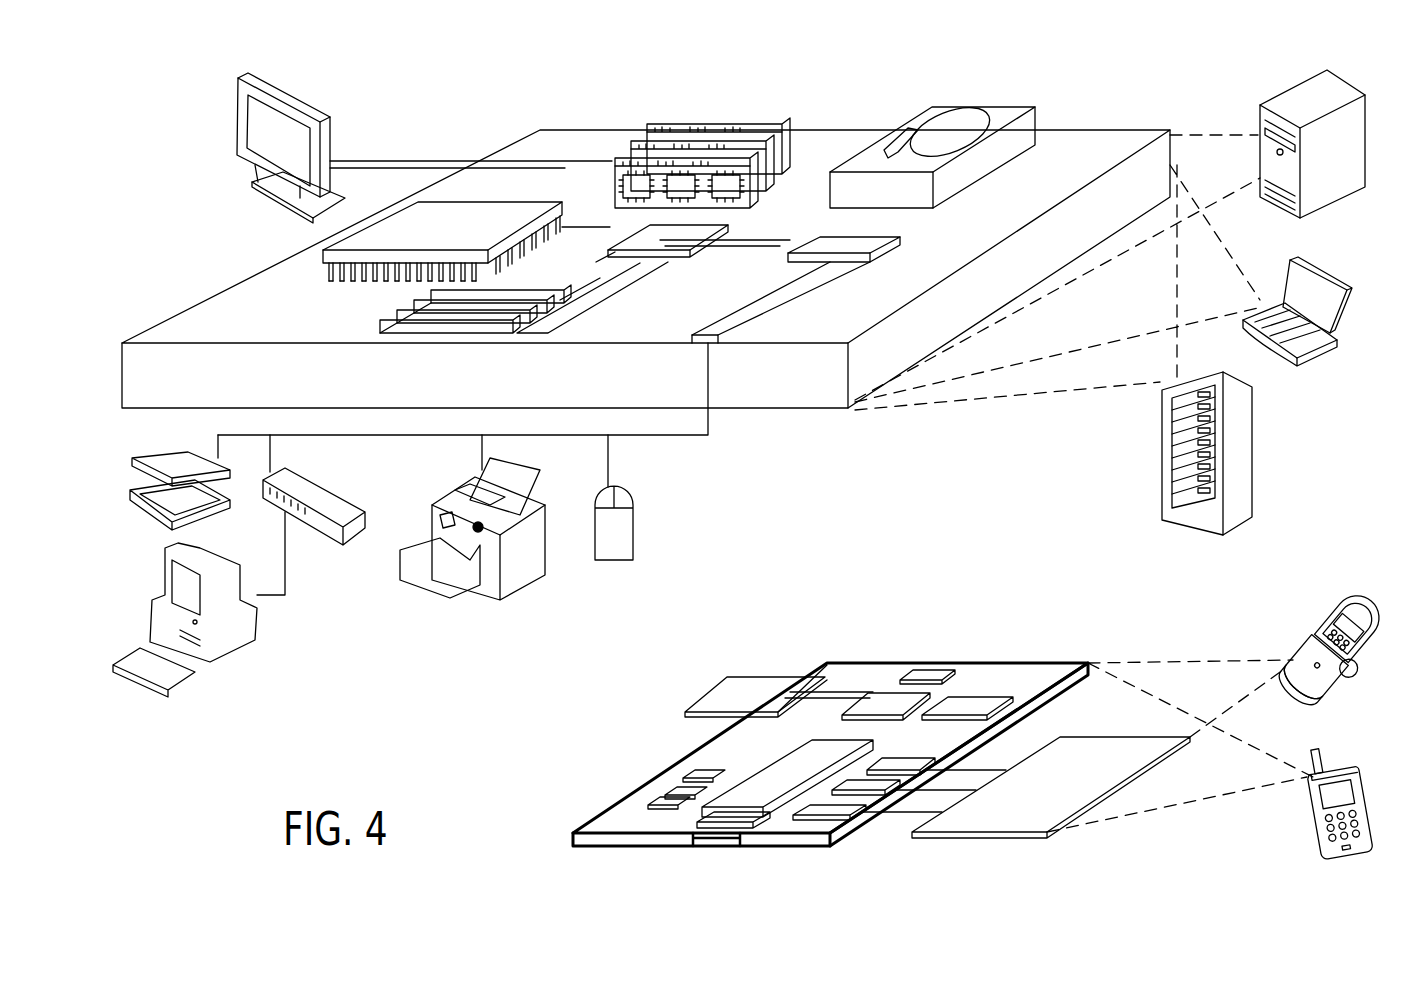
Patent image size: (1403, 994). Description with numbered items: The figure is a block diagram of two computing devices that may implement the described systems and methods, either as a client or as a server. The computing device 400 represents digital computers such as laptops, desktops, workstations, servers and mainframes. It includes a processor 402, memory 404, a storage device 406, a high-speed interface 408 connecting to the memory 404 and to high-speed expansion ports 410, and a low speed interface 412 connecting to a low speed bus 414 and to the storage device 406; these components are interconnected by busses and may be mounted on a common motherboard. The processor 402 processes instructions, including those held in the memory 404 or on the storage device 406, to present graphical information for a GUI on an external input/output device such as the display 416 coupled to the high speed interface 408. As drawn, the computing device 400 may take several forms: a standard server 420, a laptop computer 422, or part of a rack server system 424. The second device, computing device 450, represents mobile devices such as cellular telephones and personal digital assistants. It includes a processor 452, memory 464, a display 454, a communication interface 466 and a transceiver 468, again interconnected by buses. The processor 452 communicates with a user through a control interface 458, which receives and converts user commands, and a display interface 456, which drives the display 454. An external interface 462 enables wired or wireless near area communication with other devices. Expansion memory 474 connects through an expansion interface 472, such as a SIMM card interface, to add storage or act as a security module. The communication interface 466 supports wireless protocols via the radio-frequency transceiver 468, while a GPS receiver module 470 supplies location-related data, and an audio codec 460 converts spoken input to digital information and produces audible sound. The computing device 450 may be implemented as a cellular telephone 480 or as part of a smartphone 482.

The computing device 400 is at (646, 320).
The processor 402 is at (390, 241).
The memory 404 is at (702, 143).
The storage device 406 is at (932, 139).
The high-speed interface 408 is at (629, 166).
The high-speed expansion ports 410 is at (375, 293).
The low speed interface 412 is at (832, 174).
The low speed bus 414 is at (781, 373).
The display 416 is at (259, 133).
The standard server 420 is at (1279, 144).
The laptop computer 422 is at (1296, 292).
The rack server system 424 is at (1173, 453).
The computing device 450 is at (830, 705).
The processor 452 is at (785, 817).
The display 454 is at (1051, 819).
The display interface 456 is at (959, 797).
The control interface 458 is at (867, 842).
The audio codec 460 is at (936, 818).
The external interface 462 is at (731, 877).
The memory 464 is at (662, 781).
The communication interface 466 is at (872, 677).
The transceiver 468 is at (973, 674).
The GPS receiver module 470 is at (915, 636).
The expansion interface 472 is at (784, 676).
The expansion memory 474 is at (733, 679).
The cellular telephone 480 is at (1335, 640).
The smartphone 482 is at (1316, 784).